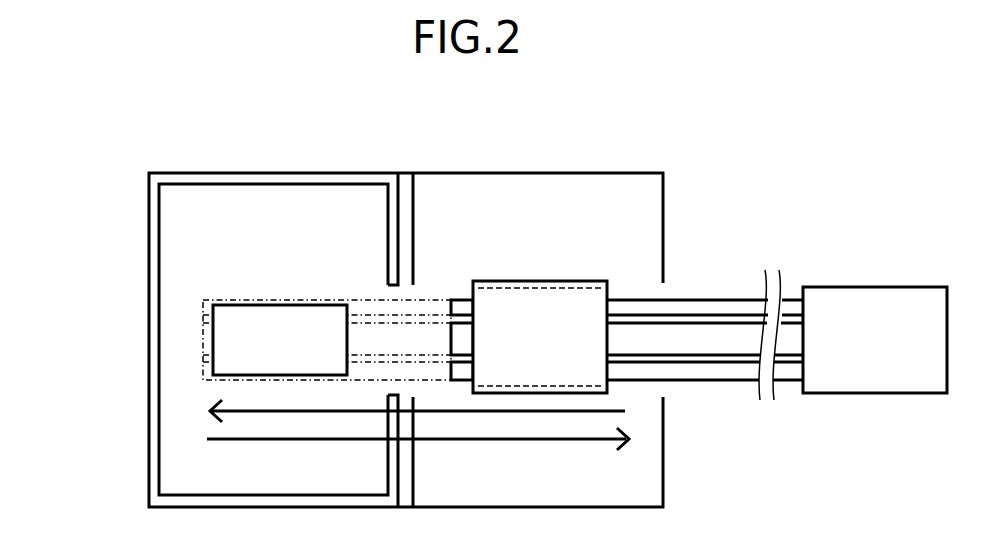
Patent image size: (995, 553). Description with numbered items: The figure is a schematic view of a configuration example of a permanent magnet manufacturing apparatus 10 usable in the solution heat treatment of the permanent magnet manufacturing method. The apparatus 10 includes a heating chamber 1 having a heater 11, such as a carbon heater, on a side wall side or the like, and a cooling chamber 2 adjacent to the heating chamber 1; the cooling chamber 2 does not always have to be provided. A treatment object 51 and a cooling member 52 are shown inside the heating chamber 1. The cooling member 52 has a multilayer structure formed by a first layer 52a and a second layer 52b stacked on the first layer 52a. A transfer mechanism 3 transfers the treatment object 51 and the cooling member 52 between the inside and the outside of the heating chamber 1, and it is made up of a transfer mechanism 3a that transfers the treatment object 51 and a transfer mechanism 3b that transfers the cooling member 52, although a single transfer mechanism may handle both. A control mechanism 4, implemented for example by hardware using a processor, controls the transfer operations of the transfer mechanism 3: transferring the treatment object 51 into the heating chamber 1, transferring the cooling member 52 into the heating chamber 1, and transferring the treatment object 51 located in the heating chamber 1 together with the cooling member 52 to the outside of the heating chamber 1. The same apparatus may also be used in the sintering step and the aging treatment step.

The permanent magnet manufacturing apparatus 10 is at (97, 137).
The heater 11 is at (151, 242).
The treatment object 51 is at (268, 304).
The cooling member 52 is at (577, 243).
The first layer 52a is at (483, 290).
The second layer 52b is at (532, 281).
The transfer mechanism 3 is at (742, 243).
The transfer mechanism 3a is at (675, 299).
The transfer mechanism 3b is at (685, 323).
The control mechanism 4 is at (875, 340).
The heating chamber 1 is at (417, 444).
The cooling chamber 2 is at (422, 458).